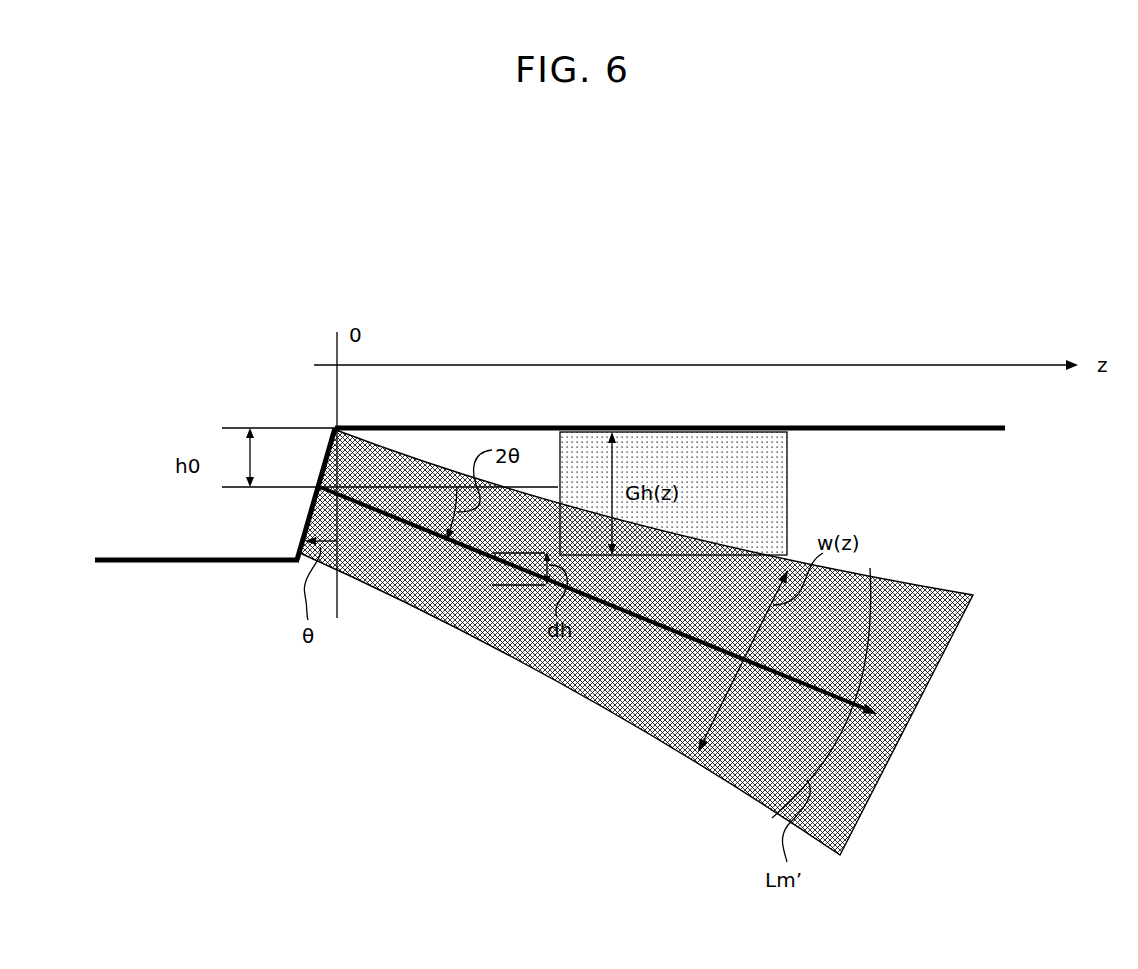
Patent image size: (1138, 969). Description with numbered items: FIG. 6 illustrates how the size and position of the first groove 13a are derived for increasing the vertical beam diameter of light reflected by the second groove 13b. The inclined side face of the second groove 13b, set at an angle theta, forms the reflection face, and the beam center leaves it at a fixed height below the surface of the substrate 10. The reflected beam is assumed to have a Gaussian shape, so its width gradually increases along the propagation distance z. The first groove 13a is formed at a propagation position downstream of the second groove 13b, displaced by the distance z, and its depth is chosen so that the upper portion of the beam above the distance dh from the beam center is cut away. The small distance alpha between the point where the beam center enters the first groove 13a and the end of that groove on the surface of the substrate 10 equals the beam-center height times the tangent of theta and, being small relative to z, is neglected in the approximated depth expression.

The substrate 10 is at (937, 428).
The first groove 13a is at (783, 490).
The second groove 13b is at (323, 462).